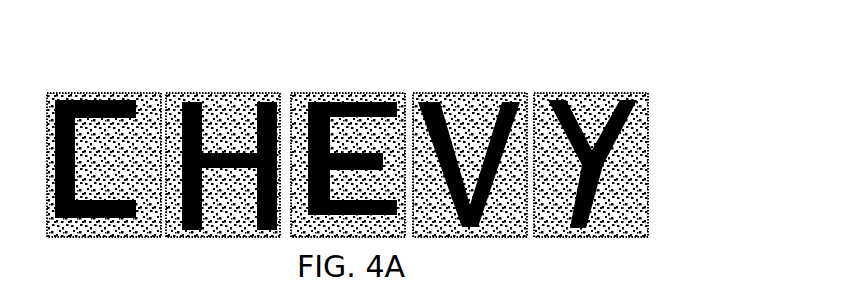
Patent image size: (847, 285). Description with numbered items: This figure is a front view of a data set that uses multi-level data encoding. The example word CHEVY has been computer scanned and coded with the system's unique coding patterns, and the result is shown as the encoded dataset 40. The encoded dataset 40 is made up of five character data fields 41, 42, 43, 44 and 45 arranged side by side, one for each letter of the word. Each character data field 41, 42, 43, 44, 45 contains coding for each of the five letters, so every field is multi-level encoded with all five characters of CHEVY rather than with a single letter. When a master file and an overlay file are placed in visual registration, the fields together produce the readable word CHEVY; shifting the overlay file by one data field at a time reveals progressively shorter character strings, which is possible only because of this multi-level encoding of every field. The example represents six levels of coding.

The encoded dataset 40 is at (648, 52).
The character data field 41 is at (108, 92).
The character data field 42 is at (228, 92).
The character data field 43 is at (347, 92).
The character data field 44 is at (467, 92).
The character data field 45 is at (588, 92).